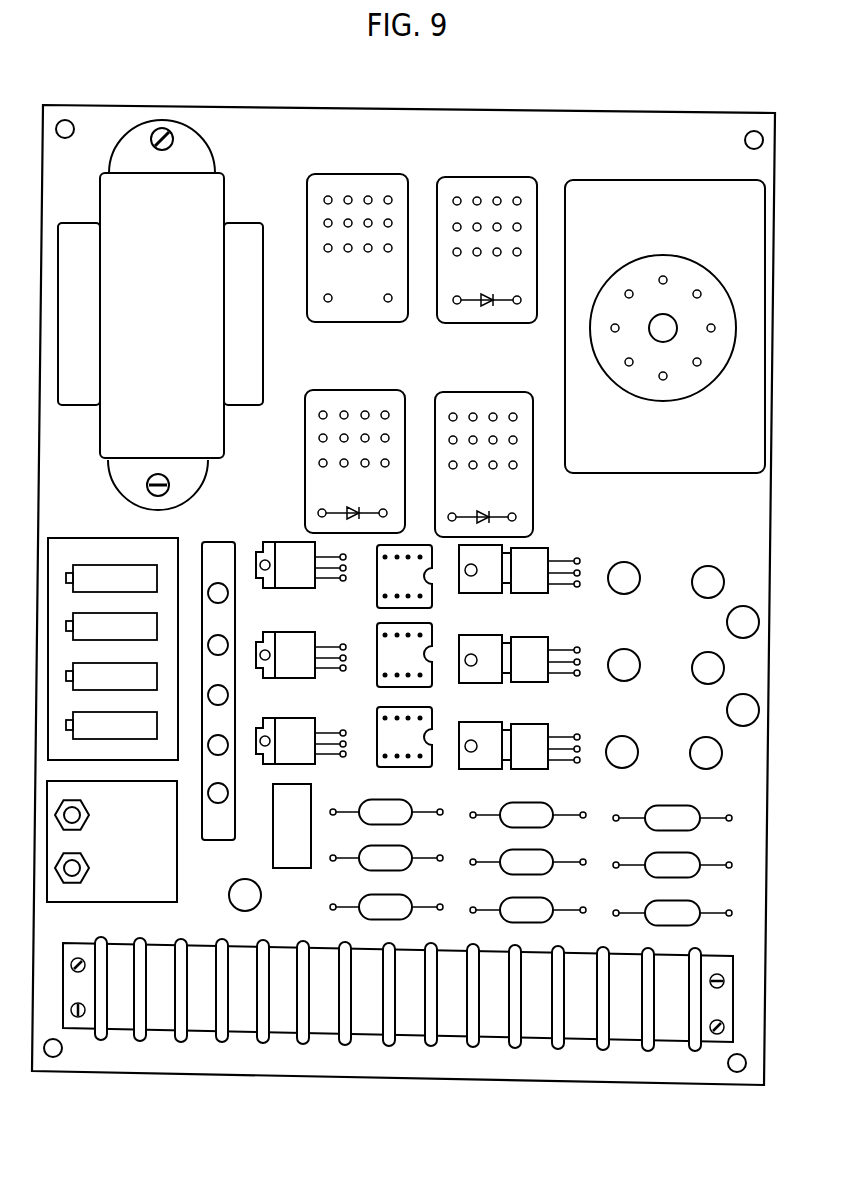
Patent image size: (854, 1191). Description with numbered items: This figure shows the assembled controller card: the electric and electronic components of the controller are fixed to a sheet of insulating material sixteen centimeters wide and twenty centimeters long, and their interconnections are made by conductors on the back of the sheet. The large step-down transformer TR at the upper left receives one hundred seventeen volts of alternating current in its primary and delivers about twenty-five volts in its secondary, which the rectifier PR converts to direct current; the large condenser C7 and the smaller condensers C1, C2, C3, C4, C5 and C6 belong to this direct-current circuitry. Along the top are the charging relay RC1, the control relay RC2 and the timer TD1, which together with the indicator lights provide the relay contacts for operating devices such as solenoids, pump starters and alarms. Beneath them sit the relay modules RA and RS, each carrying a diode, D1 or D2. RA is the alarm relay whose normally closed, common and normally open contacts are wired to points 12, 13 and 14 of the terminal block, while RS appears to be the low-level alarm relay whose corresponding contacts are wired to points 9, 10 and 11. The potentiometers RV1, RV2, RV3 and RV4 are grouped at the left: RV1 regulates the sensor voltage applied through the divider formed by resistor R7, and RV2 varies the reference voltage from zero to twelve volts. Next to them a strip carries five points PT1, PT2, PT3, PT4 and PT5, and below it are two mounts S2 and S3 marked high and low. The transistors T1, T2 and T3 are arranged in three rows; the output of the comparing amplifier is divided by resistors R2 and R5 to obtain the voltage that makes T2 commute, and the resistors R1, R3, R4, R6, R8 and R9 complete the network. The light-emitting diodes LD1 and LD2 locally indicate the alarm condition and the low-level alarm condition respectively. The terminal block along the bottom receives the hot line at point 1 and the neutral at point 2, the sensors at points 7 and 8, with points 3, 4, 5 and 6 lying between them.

The step-down transformer TR is at (160, 315).
The charging relay RC1 is at (357, 248).
The control relay RC2 is at (487, 250).
The diode D1 is at (419, 414).
The diode D2 is at (482, 525).
The alarm relay RA is at (355, 461).
The relay module RS is at (484, 464).
The timer TD1 is at (665, 326).
The potentiometer RV1 is at (111, 578).
The potentiometer RV2 is at (111, 626).
The potentiometer RV3 is at (111, 676).
The potentiometer RV4 is at (111, 725).
The test point PT1 is at (218, 581).
The test point PT2 is at (218, 633).
The test point PT3 is at (218, 683).
The test point PT4 is at (218, 732).
The test point PT5 is at (218, 781).
The condenser C1 is at (448, 575).
The condenser C2 is at (448, 655).
The condenser C3 is at (447, 737).
The condenser C4 is at (708, 582).
The condenser C5 is at (708, 668).
The condenser C6 is at (706, 753).
The condenser C7 is at (245, 895).
The transistor T1 is at (519, 569).
The transistor T2 is at (519, 659).
The transistor T3 is at (519, 745).
The diode LED LD1 is at (743, 622).
The diode LED LD2 is at (743, 710).
The high switch S2 is at (96, 823).
The low switch S3 is at (93, 876).
The rectifier PR is at (292, 826).
The resistor R1 is at (386, 812).
The resistor R2 is at (386, 858).
The resistor R3 is at (386, 907).
The resistor R4 is at (528, 815).
The resistor R5 is at (528, 862).
The resistor R6 is at (528, 910).
The resistor R7 is at (672, 818).
The resistor R8 is at (672, 865).
The resistor R9 is at (672, 913).
The terminal block point 1 is at (110, 988).
The terminal block point 2 is at (150, 989).
The terminal 3 is at (191, 990).
The terminal 4 is at (232, 990).
The terminal 5 is at (273, 991).
The terminal 6 is at (313, 992).
The terminal block point 7 is at (356, 993).
The terminal block point 8 is at (399, 994).
The terminal block point 9 is at (441, 994).
The terminal block point 10 is at (485, 995).
The terminal block point 11 is at (526, 996).
The terminal block point 12 is at (570, 997).
The terminal block point 13 is at (615, 998).
The terminal block point 14 is at (661, 999).